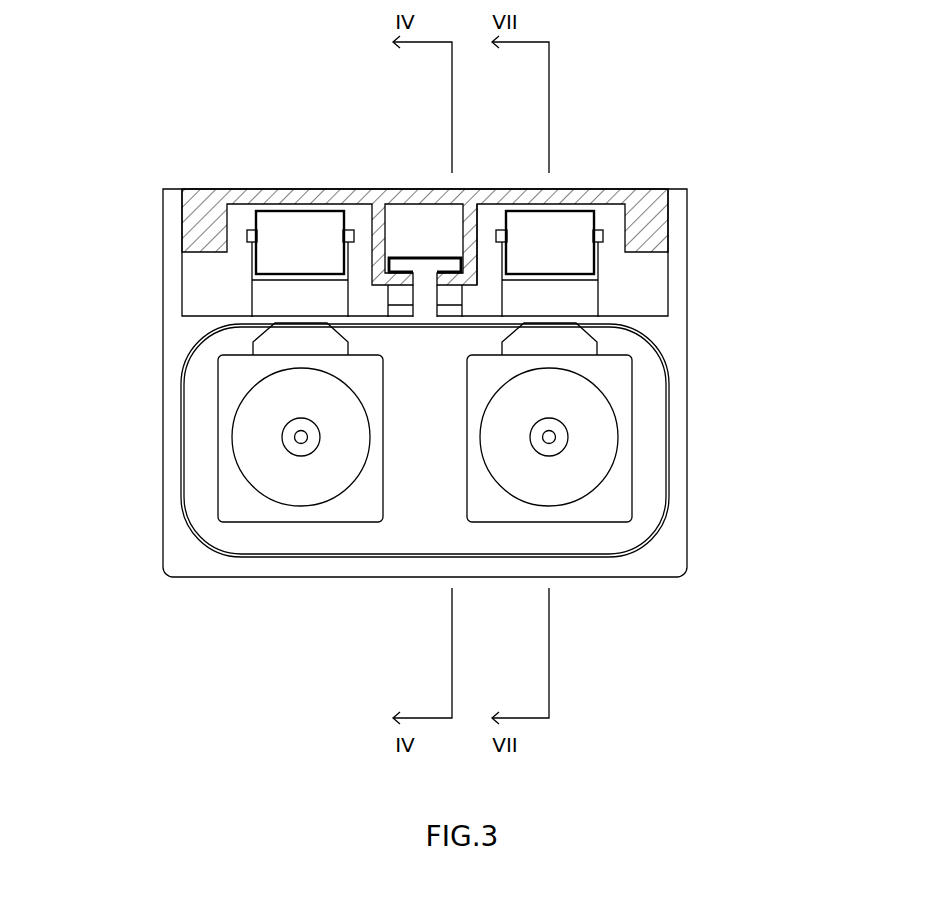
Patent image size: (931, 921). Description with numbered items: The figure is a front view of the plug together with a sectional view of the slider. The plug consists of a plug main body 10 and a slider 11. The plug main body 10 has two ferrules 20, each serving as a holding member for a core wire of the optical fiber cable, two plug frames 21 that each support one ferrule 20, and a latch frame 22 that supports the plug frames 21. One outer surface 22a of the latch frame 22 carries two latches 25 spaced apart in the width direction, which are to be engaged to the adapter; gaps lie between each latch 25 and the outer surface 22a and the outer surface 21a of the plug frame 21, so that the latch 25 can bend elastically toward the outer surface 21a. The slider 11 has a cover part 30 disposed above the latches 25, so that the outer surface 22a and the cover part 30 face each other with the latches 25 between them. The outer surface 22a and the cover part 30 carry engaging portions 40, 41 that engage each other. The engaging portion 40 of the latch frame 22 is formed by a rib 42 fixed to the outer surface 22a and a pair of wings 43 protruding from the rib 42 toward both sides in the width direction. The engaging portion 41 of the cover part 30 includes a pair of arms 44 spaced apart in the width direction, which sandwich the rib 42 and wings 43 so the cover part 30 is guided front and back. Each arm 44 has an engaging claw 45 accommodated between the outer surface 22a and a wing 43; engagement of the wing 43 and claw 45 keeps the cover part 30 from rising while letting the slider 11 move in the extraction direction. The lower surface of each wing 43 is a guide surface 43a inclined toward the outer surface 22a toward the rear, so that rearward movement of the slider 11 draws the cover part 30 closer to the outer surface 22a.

The plug main body 10 is at (650, 581).
The slider 11 is at (205, 180).
The ferrule 20 is at (276, 440).
The plug frame 21 is at (222, 417).
The outer surface of plug frame 21a is at (614, 354).
The latch frame 22 is at (683, 530).
The outer surface of latch frame 22a is at (618, 317).
The latch 25 is at (240, 258).
The cover part 30 is at (255, 192).
The engaging portion of latch frame 40 is at (311, 640).
The engaging portion of cover part 41 is at (480, 221).
The rib 42 is at (425, 300).
The wing 43 is at (401, 312).
The guide surface of wing 43a is at (395, 295).
The arm 44 is at (373, 223).
The engaging claw 45 is at (400, 267).